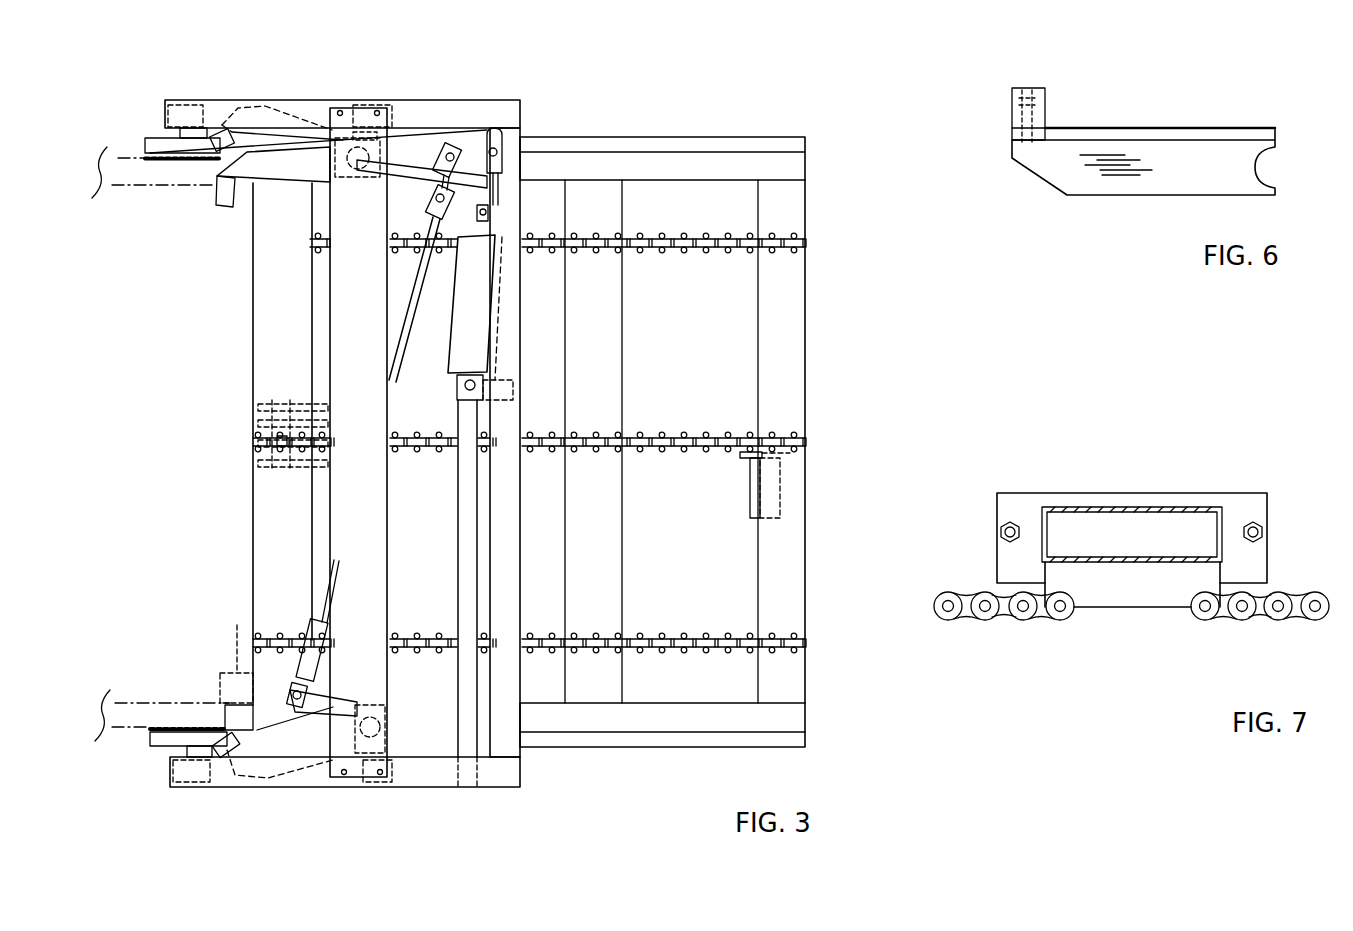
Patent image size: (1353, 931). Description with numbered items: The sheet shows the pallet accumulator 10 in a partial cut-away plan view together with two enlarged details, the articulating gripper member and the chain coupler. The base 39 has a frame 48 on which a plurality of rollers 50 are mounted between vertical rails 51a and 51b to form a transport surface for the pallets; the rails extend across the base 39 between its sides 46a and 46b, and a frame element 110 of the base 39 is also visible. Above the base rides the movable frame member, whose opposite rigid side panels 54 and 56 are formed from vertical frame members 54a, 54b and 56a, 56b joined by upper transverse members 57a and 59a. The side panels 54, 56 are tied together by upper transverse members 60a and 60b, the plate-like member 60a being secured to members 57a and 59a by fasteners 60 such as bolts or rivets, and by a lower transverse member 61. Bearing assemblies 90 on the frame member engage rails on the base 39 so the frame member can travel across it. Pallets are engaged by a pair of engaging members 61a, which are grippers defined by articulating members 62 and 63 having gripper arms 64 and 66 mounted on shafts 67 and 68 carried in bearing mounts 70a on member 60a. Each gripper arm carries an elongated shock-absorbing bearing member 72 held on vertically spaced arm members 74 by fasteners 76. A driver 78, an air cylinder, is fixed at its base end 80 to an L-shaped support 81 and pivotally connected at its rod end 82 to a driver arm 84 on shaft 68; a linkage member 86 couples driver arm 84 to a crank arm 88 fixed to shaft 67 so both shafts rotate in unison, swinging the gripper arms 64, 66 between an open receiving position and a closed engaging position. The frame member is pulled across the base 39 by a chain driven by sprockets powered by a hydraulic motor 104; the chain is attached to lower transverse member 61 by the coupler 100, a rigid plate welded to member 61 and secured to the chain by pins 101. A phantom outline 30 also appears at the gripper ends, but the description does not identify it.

In FIG. 3, the accumulator 10 is at (842, 142).
In FIG. 3, the load (pallet) outline 30 is at (110, 185).
In FIG. 3, the base 39 is at (813, 315).
In FIG. 3, the side of base 46a is at (630, 748).
In FIG. 3, the side of base 46b is at (657, 136).
In FIG. 3, the frame 48 is at (779, 134).
In FIG. 3, the rollers 50 is at (703, 246).
In FIG. 3, the vertical rail 51a is at (716, 253).
In FIG. 3, the vertical rail 51b is at (694, 234).
In FIG. 3, the side panel 54 is at (414, 806).
In FIG. 3, the vertical frame member 54a is at (183, 790).
In FIG. 3, the vertical frame member 54b is at (375, 787).
In FIG. 3, the side panel 56 is at (436, 82).
In FIG. 3, the vertical frame member 56a is at (186, 116).
In FIG. 3, the vertical frame member 56b is at (372, 108).
In FIG. 3, the upper transverse member 57a is at (300, 790).
In FIG. 3, the upper transverse member 59a is at (305, 100).
In FIG. 3, the fasteners 60 is at (340, 108).
In FIG. 3, the upper transverse member 60a is at (352, 515).
In FIG. 3, the upper transverse member 60b is at (512, 540).
In FIG. 3, the lower transverse member 61 is at (258, 348).
In FIG. 7, the lower transverse member 61 is at (1137, 508).
In FIG. 3, the engaging members 61a is at (116, 285).
In FIG. 3, the articulating member 62 is at (210, 214).
In FIG. 3, the articulating member 63 is at (222, 692).
In FIG. 3, the gripper arm 64 is at (198, 196).
In FIG. 3, the gripper arm 66 is at (242, 793).
In FIG. 3, the shaft 67 is at (370, 178).
In FIG. 3, the shaft 68 is at (392, 712).
In FIG. 3, the bearing mounts 70a is at (318, 183).
In FIG. 3, the bearing member 72 is at (195, 157).
In FIG. 6, the bearing member 72 is at (1047, 104).
In FIG. 3, the arm members 74 is at (293, 731).
In FIG. 6, the arm members 74 is at (1143, 132).
In FIG. 6, the fasteners 76 is at (1026, 92).
In FIG. 3, the driver 78 is at (456, 330).
In FIG. 3, the base end 80 is at (483, 388).
In FIG. 3, the L-shaped support 81 is at (453, 530).
In FIG. 3, the rod end 82 is at (492, 224).
In FIG. 3, the driver arm 84 is at (402, 168).
In FIG. 3, the linkage member 86 is at (397, 376).
In FIG. 3, the crank arm 88 is at (298, 690).
In FIG. 3, the bearing assemblies 90 is at (159, 142).
In FIG. 7, the coupler 100 is at (1105, 595).
In FIG. 7, the pins 101 is at (1060, 612).
In FIG. 3, the motor 104 is at (747, 494).
In FIG. 3, the frame element 110 is at (636, 545).